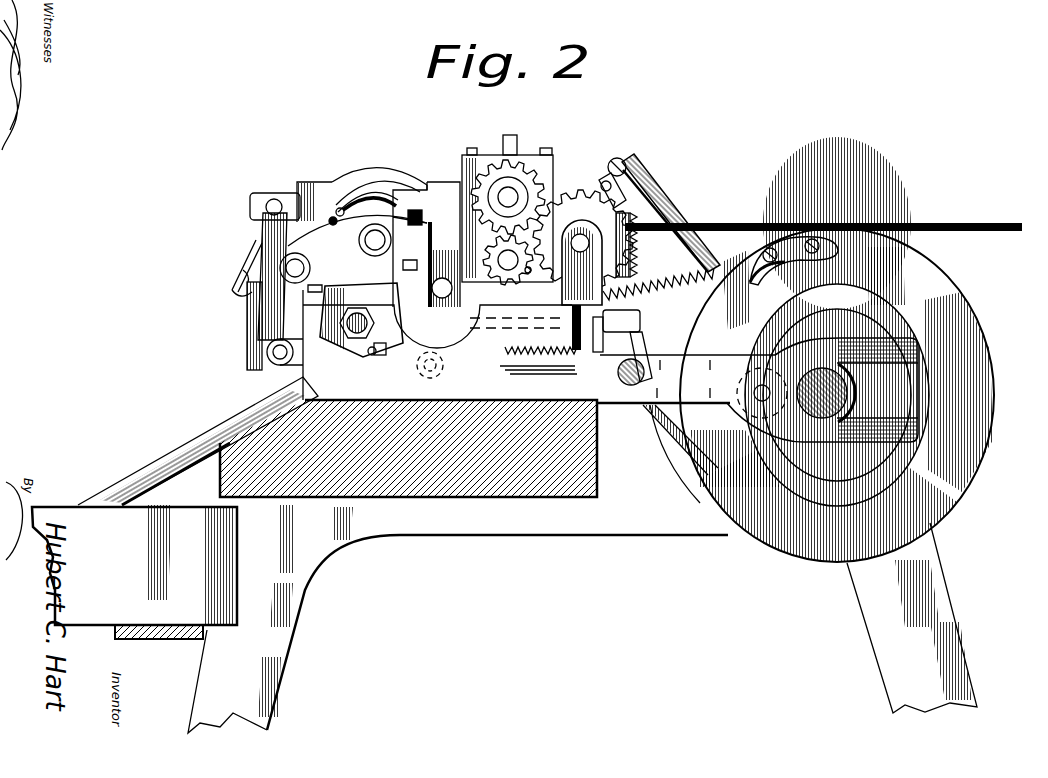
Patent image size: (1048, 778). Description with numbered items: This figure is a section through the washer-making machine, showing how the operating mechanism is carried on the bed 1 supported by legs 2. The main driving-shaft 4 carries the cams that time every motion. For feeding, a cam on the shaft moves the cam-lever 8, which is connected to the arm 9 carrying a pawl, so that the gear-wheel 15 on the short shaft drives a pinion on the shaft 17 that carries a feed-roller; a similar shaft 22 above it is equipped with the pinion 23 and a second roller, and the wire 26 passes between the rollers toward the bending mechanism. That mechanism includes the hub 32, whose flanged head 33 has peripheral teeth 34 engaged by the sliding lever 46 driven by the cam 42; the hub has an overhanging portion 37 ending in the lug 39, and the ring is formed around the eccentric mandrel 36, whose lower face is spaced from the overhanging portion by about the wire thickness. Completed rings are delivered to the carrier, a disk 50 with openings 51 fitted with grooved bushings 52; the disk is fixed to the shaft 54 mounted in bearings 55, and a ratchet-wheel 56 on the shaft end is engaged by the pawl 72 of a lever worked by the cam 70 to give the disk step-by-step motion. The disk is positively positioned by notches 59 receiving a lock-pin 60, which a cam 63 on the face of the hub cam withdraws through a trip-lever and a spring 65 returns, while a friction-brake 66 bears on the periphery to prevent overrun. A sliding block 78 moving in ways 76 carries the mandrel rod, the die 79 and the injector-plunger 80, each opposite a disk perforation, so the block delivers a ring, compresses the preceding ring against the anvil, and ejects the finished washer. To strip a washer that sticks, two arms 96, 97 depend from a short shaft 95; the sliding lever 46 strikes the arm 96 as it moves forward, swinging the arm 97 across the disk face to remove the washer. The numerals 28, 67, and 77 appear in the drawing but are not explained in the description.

The bed 1 is at (223, 417).
The legs 2 is at (288, 630).
The main driving-shaft 4 is at (838, 362).
The cam-lever 8 is at (657, 221).
The arm 9 is at (601, 183).
The gear-wheel 15 is at (633, 253).
The shaft 17 is at (500, 275).
The shaft 22 is at (512, 193).
The pinion 23 is at (510, 190).
The wire 26 is at (788, 224).
The spring 28 is at (640, 289).
The hub 32 is at (359, 193).
The flanged head 33 is at (400, 187).
The peripheral teeth 34 is at (358, 172).
The mandrel 36 is at (310, 270).
The overhanging portion 37 is at (378, 196).
The lug 39 is at (331, 187).
The cam 42 is at (950, 295).
The sliding lever 46 is at (652, 340).
The disk 50 is at (360, 241).
The openings 51 is at (243, 270).
The bushings 52 is at (247, 300).
The shaft 54 is at (347, 333).
The bearings 55 is at (460, 328).
The ratchet-wheel 56 is at (381, 356).
The notches 59 is at (332, 218).
The lock-pin 60 is at (465, 340).
The cam 63 is at (808, 238).
The spring 65 is at (533, 352).
The friction-brake 66 is at (490, 177).
The strut 67 is at (653, 423).
The cam 70 is at (592, 230).
The pawl 72 is at (632, 176).
The ways 76 is at (529, 274).
The arm edge 77 is at (660, 362).
The sliding block 78 is at (568, 238).
The die 79 is at (430, 379).
The injector-plunger 80 is at (267, 348).
The short shaft 95 is at (266, 205).
The arm 96 is at (262, 236).
The arm 97 is at (253, 244).